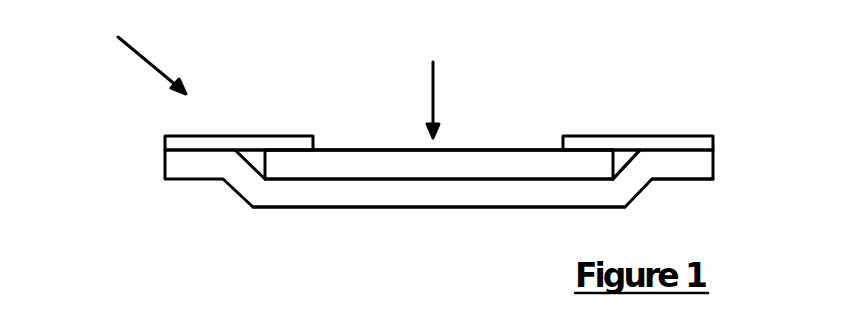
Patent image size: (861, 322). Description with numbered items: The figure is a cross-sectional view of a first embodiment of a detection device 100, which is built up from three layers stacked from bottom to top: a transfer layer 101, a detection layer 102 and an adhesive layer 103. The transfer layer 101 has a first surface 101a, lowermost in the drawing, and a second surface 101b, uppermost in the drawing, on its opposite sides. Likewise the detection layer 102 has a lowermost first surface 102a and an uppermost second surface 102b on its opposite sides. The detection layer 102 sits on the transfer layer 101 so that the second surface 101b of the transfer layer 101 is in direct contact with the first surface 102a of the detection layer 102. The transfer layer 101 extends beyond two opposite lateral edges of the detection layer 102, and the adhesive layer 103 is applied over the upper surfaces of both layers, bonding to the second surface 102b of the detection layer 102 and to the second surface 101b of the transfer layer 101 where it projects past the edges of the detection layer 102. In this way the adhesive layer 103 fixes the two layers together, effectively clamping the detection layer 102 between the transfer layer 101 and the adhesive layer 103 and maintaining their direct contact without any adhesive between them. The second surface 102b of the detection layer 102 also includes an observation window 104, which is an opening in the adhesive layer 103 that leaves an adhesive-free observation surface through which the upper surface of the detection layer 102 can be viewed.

The detection device 100 is at (132, 52).
The transfer layer 101 is at (172, 163).
The first surface of the transfer layer 101a is at (280, 208).
The second surface of the transfer layer 101b is at (652, 148).
The detection layer 102 is at (275, 165).
The first surface of the detection layer 102a is at (319, 180).
The second surface of the detection layer 102b is at (337, 150).
The adhesive layer 103 is at (185, 143).
The observation window 104 is at (434, 87).